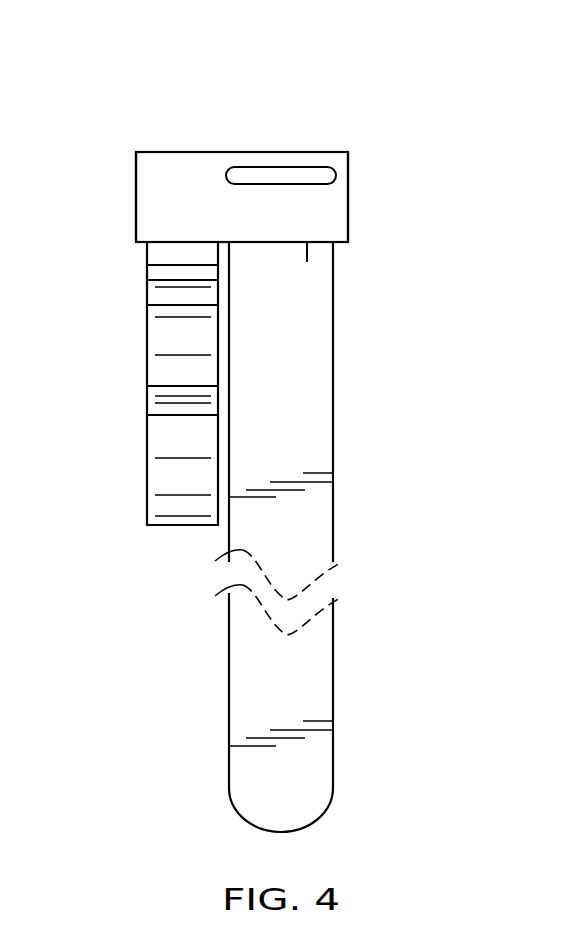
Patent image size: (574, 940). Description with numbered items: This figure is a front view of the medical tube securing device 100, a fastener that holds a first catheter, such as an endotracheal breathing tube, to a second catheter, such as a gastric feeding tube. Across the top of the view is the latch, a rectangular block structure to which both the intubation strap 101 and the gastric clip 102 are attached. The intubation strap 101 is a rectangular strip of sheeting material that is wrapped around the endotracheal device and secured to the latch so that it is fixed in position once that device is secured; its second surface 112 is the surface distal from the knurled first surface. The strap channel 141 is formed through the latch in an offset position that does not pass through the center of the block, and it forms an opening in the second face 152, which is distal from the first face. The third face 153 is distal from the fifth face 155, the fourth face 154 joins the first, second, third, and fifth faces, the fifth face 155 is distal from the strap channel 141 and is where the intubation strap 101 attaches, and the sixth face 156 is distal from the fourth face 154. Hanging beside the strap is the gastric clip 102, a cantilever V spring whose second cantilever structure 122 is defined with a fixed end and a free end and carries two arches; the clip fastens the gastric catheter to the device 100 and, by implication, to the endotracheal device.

The medical tube securing device 100 is at (145, 104).
The intubation strap 101 is at (333, 540).
The gastric clip 102 is at (163, 438).
The second surface 112 is at (315, 687).
The second cantilever structure 122 is at (158, 489).
The strap channel 141 is at (280, 178).
The second face 152 is at (333, 197).
The third face 153 is at (222, 152).
The fourth face 154 is at (136, 198).
The fifth face 155 is at (307, 262).
The sixth face 156 is at (348, 205).